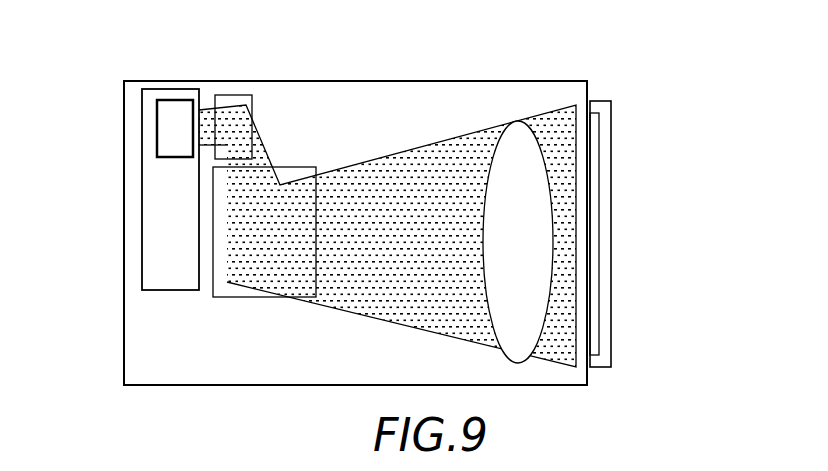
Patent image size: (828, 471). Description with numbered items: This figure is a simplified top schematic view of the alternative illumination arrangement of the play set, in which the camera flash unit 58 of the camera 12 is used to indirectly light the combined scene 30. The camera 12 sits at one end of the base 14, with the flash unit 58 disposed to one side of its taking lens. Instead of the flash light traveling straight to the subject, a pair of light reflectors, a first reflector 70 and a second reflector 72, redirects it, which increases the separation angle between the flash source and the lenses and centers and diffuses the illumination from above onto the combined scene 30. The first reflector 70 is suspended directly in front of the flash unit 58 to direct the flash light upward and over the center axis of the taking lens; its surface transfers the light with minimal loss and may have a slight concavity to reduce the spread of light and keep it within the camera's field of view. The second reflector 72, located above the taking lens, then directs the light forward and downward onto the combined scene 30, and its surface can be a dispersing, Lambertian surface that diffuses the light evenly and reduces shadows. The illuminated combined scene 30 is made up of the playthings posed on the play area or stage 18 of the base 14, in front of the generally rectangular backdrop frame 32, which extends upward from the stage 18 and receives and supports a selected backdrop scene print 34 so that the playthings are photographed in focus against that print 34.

The combined scene 30 is at (500, 70).
The camera 12 is at (142, 230).
The camera flash unit 58 is at (157, 112).
The first reflector 70 is at (243, 96).
The second reflector 72 is at (270, 297).
The base 14 is at (420, 369).
The play area or stage 18 is at (535, 311).
The backdrop frame 32 is at (612, 355).
The backdrop scene print 34 is at (599, 138).